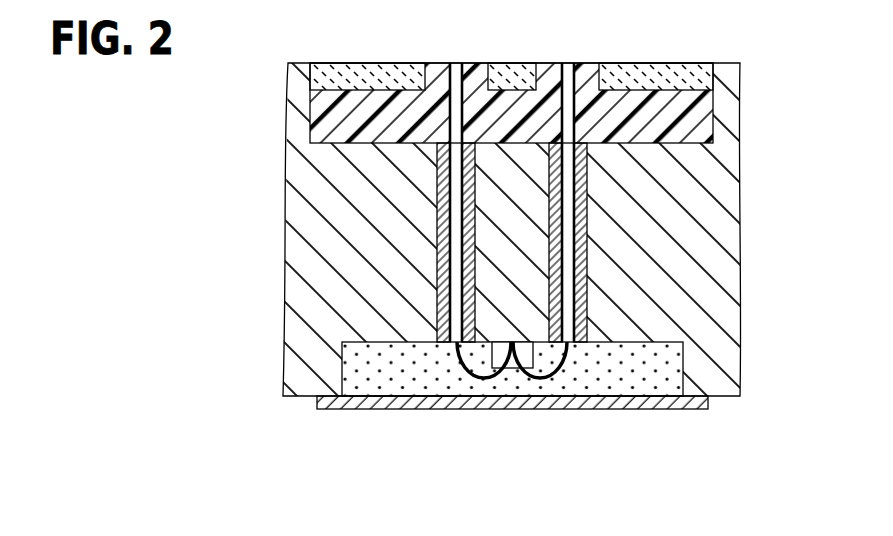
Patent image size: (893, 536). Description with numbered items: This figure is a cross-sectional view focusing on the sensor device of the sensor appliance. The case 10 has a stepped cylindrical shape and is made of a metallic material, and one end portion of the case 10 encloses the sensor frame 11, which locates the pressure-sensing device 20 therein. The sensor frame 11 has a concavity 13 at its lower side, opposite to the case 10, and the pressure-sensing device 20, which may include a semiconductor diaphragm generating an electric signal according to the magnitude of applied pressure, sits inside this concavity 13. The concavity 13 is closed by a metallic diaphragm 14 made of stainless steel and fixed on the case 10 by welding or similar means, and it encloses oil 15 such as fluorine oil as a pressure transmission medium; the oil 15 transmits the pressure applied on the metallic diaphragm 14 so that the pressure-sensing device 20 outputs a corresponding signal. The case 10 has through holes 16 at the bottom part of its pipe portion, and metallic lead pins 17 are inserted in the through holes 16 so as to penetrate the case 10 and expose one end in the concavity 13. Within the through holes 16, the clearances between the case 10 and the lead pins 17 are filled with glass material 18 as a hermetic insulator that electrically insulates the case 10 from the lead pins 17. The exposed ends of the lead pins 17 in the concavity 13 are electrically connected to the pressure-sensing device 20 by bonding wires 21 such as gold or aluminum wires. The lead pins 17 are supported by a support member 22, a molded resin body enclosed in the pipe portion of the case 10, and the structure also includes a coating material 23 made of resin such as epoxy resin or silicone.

The case 10 is at (723, 397).
The sensor frame 11 is at (683, 236).
The concavity 13 is at (353, 372).
The metallic diaphragm 14 is at (672, 400).
The oil 15 is at (410, 378).
The through holes 16 is at (446, 274).
The lead pins 17 is at (458, 240).
The glass material 18 is at (445, 212).
The pressure-sensing device 20 is at (513, 357).
The bonding wires 21 is at (477, 377).
The support member 22 is at (686, 66).
The coating material 23 is at (325, 100).